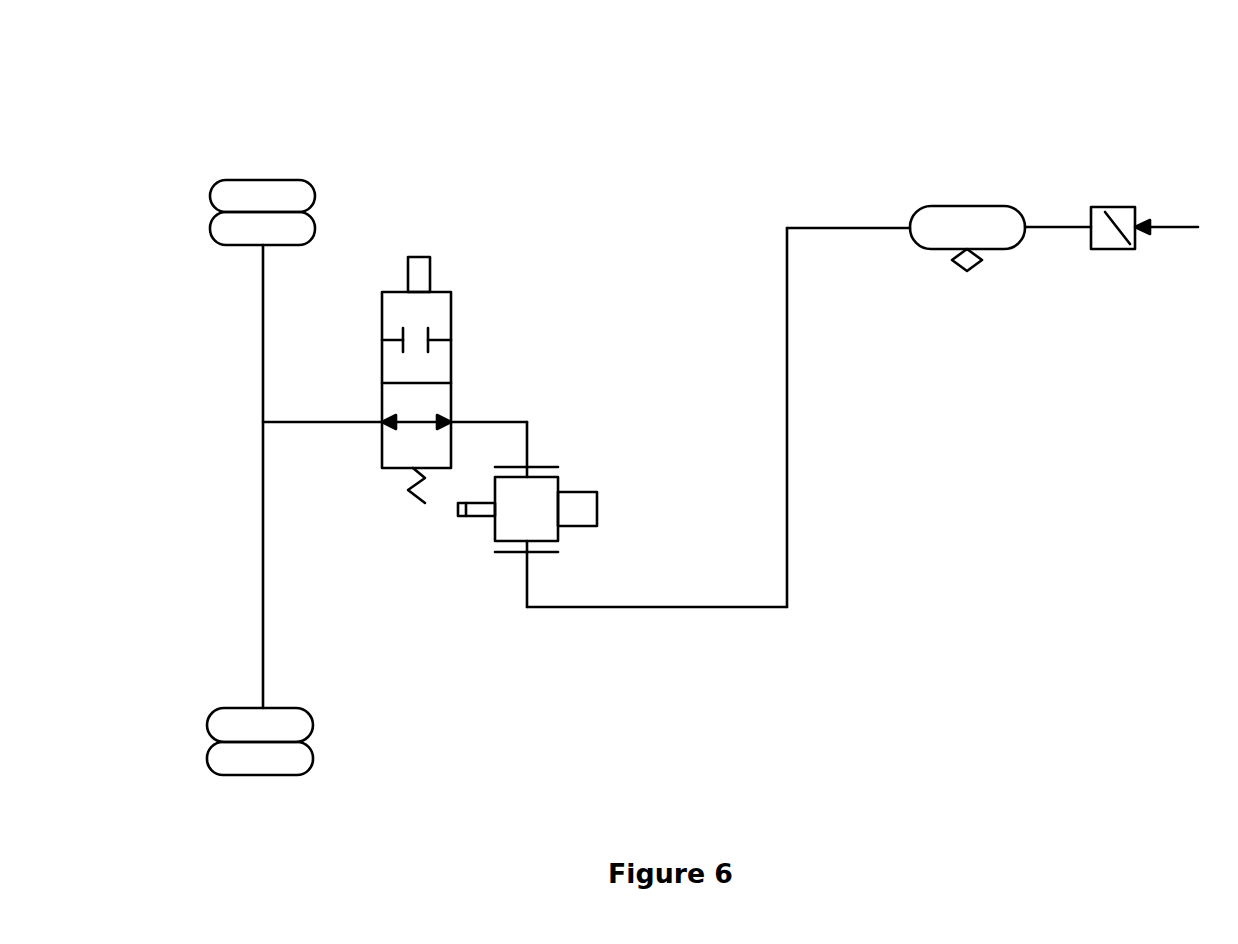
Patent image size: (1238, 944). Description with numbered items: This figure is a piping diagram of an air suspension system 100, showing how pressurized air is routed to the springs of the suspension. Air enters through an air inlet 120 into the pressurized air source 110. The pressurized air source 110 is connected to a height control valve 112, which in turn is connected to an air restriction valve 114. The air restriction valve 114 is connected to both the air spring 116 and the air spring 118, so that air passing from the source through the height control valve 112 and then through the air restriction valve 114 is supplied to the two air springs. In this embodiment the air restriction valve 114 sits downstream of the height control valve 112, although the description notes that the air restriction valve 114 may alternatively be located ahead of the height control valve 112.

The air suspension system 100 is at (833, 119).
The pressurized air source 110 is at (1010, 203).
The height control valve 112 is at (597, 505).
The air restriction valve 114 is at (451, 349).
The air spring 116 is at (268, 180).
The air spring 118 is at (268, 775).
The air inlet 120 is at (1108, 250).